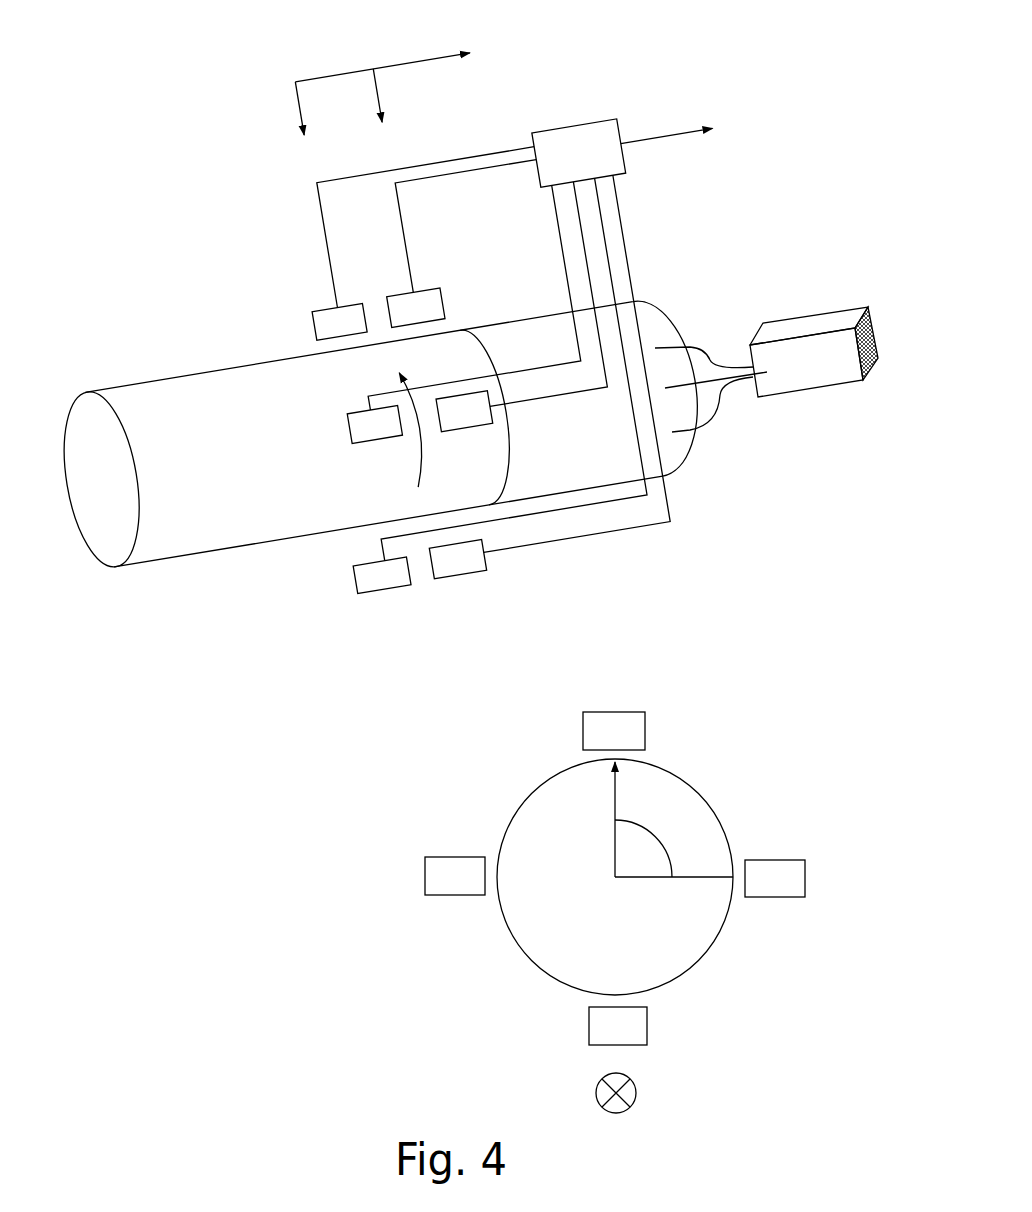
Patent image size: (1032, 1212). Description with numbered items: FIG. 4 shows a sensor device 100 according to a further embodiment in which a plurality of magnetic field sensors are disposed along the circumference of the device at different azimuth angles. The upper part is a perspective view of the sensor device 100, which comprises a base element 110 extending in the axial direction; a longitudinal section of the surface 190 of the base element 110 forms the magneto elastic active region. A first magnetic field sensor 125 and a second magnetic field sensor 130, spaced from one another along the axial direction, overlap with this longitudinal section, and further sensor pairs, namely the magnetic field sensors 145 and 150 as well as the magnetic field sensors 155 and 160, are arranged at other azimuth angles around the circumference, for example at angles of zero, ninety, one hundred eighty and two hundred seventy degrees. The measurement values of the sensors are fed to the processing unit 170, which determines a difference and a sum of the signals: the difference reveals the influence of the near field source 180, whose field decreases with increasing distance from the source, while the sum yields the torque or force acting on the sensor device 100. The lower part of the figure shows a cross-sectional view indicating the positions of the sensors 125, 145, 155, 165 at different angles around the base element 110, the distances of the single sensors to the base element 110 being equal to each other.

The sensor device 100 is at (128, 247).
The base element 110 is at (198, 551).
The first magnetic field sensor 125 is at (311, 322).
The second magnetic field sensor 130 is at (444, 304).
The magnetic field sensor 145 is at (345, 427).
The magnetic field sensor 150 is at (468, 430).
The magnetic field sensor 155 is at (355, 576).
The magnetic field sensor 160 is at (460, 577).
The magnetic field sensor 165 is at (425, 872).
The processing unit 170 is at (584, 119).
The near field source 180 is at (803, 313).
The surface 190 is at (124, 386).